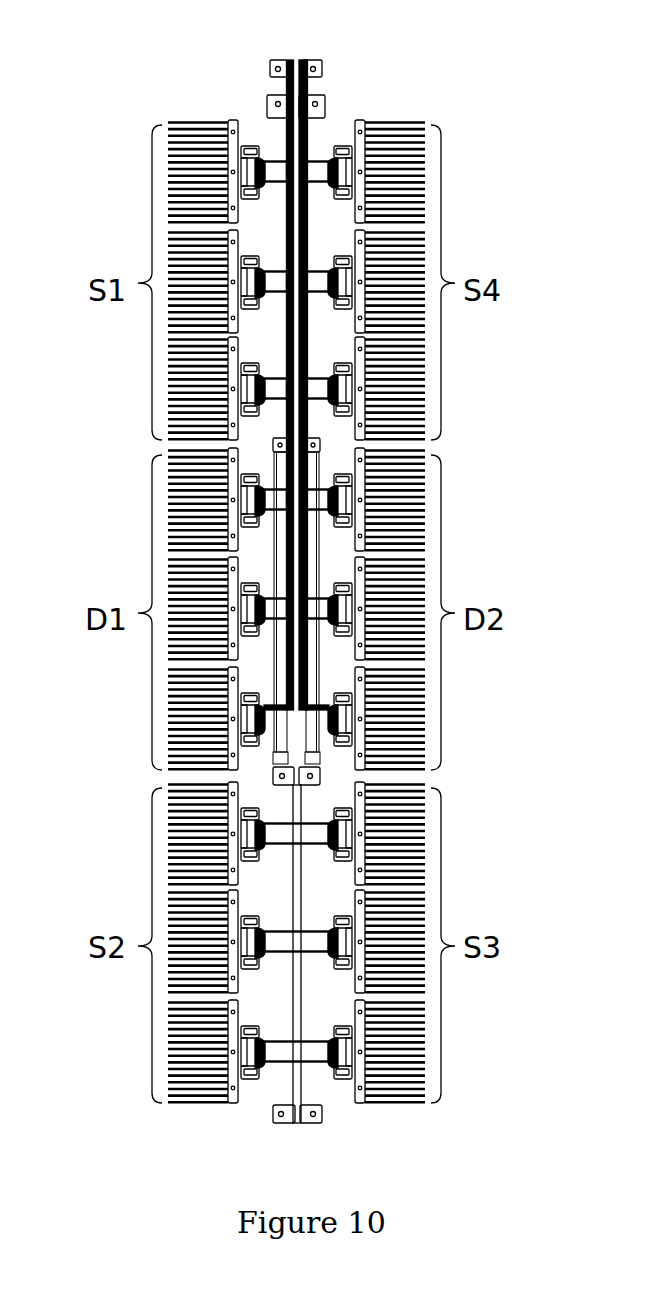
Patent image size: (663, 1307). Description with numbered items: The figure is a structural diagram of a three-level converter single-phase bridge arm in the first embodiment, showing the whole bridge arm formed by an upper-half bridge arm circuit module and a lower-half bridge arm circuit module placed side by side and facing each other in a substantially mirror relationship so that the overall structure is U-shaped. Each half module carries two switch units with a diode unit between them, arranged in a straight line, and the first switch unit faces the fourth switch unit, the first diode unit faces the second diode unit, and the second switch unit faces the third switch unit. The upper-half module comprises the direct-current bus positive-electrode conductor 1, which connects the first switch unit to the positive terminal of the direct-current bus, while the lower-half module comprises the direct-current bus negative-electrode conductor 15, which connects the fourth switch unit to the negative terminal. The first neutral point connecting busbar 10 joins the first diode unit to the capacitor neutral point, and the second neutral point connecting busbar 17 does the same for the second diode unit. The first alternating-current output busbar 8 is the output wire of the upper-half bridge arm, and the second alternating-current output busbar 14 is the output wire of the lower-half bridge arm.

The direct-current bus positive-electrode conductor 1 is at (268, 107).
The first neutral point connecting busbar 10 is at (272, 63).
The second neutral point connecting busbar 17 is at (322, 63).
The direct-current bus negative-electrode conductor 15 is at (325, 104).
The first alternating-current output busbar 8 is at (272, 1117).
The second alternating-current output busbar 14 is at (322, 1117).